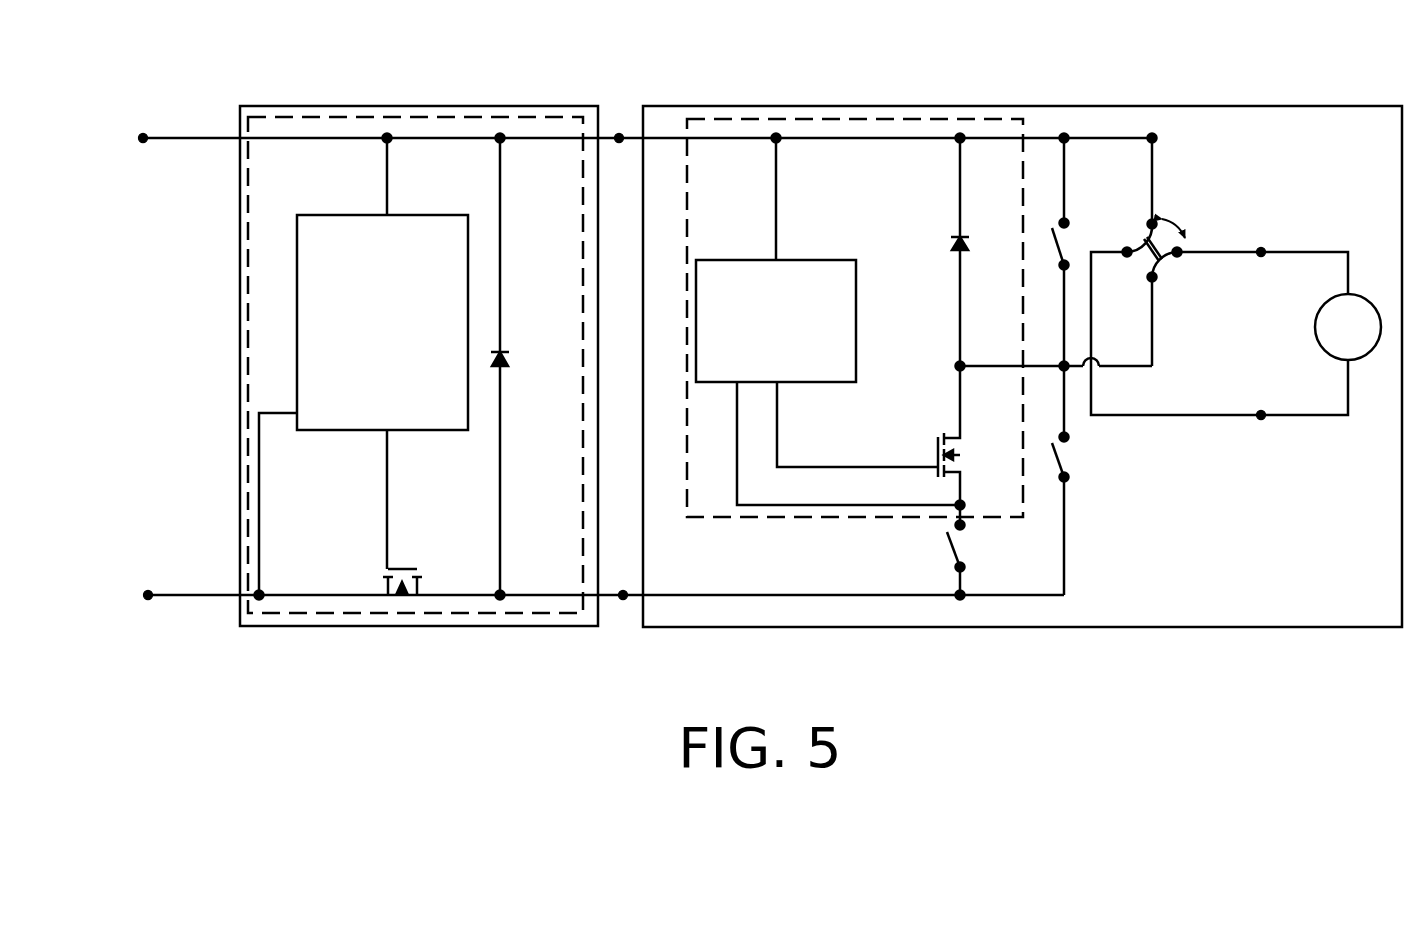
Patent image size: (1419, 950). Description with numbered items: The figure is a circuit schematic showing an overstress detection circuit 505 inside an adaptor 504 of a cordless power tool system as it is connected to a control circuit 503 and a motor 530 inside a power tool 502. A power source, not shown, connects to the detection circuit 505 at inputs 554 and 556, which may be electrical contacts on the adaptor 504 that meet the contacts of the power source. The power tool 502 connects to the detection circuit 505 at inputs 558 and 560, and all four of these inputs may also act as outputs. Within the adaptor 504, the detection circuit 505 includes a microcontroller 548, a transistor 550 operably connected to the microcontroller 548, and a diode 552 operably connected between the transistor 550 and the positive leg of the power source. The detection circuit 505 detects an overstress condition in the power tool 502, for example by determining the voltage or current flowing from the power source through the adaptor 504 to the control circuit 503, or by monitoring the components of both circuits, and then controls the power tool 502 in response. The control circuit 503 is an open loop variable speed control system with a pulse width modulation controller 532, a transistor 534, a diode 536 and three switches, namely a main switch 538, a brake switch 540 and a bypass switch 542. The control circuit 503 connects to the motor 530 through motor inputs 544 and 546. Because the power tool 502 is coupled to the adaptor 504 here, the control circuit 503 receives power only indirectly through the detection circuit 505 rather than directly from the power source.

The power tool 502 is at (672, 102).
The control circuit 503 is at (972, 115).
The adaptor 504 is at (318, 102).
The overstress detection circuit 505 is at (534, 115).
The motor 530 is at (1312, 325).
The pulse width modulation (PWM) controller 532 is at (728, 258).
The transistor 534 is at (925, 455).
The diode 536 is at (948, 238).
The main switch 538 is at (940, 551).
The brake switch 540 is at (1072, 237).
The bypass switch 542 is at (1073, 490).
The motor input 544 is at (1260, 242).
The motor input 546 is at (1265, 428).
The microcontroller 548 is at (424, 430).
The transistor 550 is at (382, 568).
The diode 552 is at (505, 343).
The input 554 is at (145, 152).
The input 556 is at (148, 608).
The input 558 is at (619, 130).
The input 560 is at (623, 608).